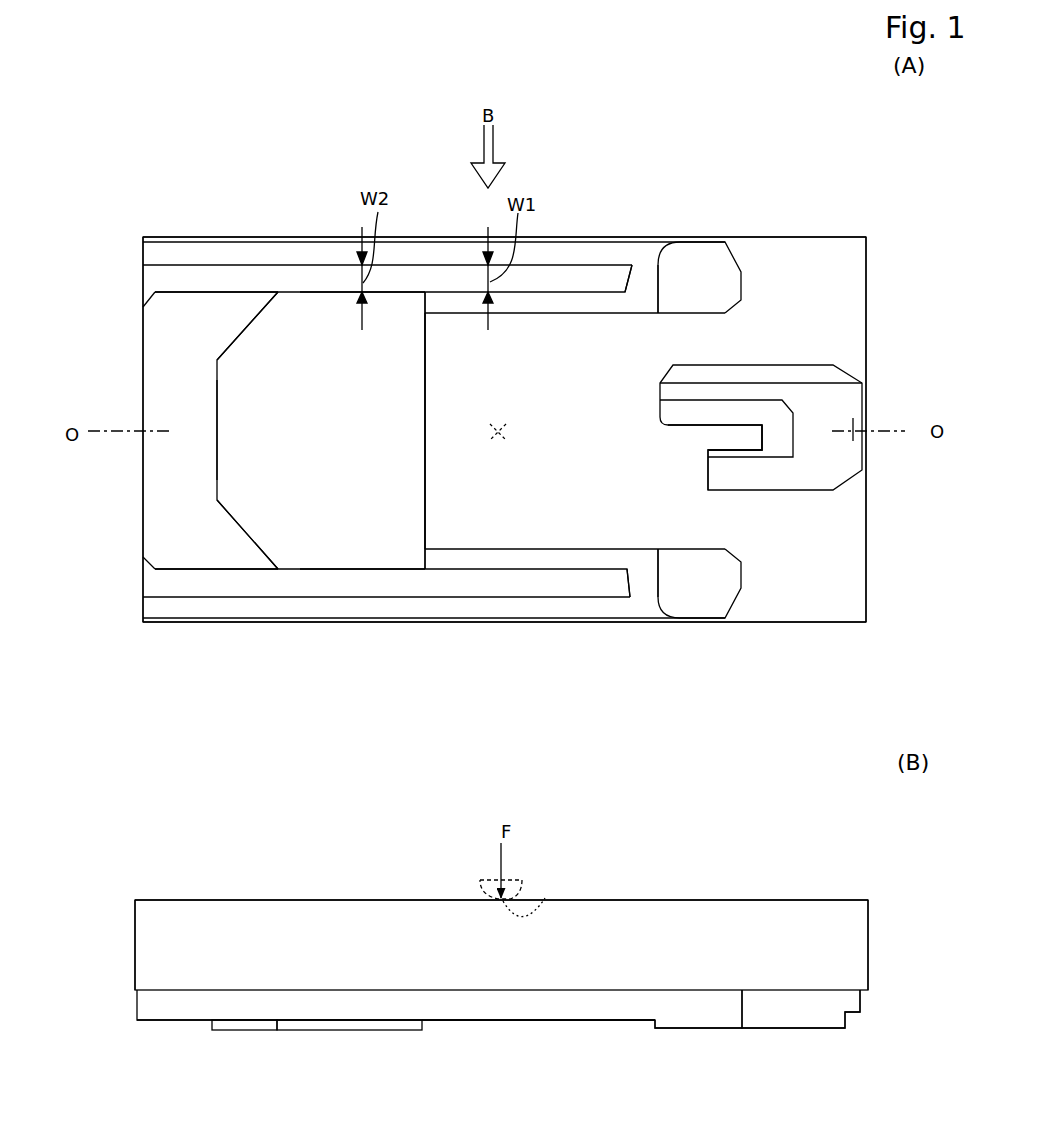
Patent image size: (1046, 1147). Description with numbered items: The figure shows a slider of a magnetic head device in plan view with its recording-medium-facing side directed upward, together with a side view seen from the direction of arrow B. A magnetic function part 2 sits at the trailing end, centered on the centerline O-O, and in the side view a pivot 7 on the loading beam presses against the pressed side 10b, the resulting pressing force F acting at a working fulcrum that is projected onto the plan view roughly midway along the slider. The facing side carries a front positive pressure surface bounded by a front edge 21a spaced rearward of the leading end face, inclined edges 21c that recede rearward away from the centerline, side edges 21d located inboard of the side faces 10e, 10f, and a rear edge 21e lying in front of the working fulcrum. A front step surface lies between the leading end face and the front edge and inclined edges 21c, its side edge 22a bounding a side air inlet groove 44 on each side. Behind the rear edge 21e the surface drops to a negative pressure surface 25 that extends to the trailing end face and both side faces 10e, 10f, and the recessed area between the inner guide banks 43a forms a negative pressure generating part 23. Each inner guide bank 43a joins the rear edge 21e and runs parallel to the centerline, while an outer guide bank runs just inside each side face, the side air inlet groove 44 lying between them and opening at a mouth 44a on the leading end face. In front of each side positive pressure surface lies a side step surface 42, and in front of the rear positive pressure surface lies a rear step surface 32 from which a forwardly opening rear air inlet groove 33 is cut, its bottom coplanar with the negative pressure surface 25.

The pressed side 10b is at (574, 894).
The side face on diametrically inner side 10e is at (525, 623).
The side face on diametrically outer side 10f is at (596, 237).
The magnetic function part 2 is at (855, 421).
The pivot 7 is at (480, 887).
The front edge 21a is at (225, 462).
The inclined edges 21c is at (248, 328).
The side edges 21d is at (336, 297).
The rear edge 21e is at (428, 462).
The side edge of front step surface 22a is at (208, 292).
The negative pressure generating part 23 is at (433, 414).
The negative pressure surface 25 is at (688, 512).
The rear step surface 32 is at (775, 427).
The rear air inlet groove 33 is at (735, 437).
The side step surface 42 is at (648, 270).
The inner guide bank 43a is at (545, 310).
The side air inlet groove 44 is at (303, 278).
The mouth 44a is at (143, 285).